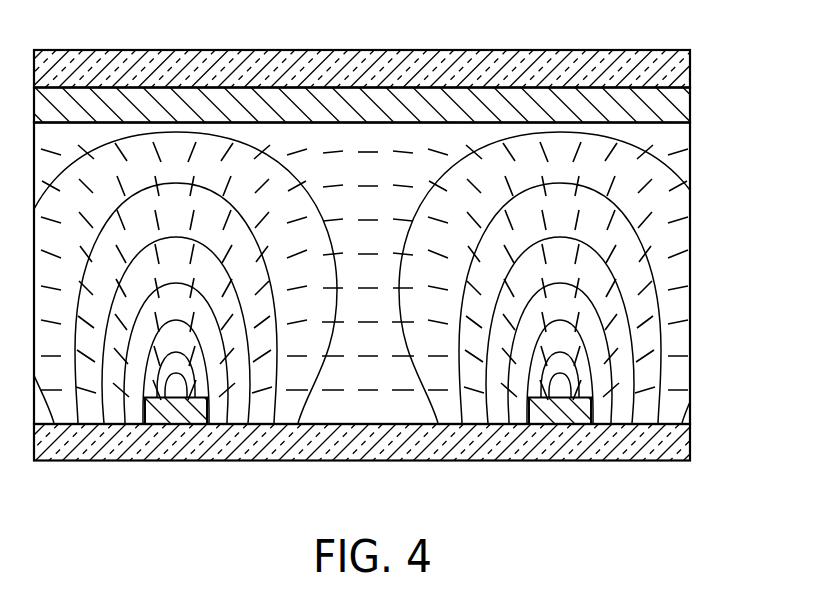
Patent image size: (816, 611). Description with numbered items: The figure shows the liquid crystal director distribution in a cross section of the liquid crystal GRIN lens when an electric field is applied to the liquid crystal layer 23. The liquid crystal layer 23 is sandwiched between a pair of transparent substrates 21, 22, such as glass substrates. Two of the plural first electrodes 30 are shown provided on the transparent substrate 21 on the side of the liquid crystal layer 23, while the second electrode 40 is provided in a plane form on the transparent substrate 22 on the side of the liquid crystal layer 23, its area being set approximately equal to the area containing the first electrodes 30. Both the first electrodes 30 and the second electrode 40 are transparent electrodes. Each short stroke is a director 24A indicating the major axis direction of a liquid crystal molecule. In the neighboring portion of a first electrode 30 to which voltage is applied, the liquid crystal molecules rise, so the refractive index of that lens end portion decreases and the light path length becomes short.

The transparent substrate 21 is at (686, 446).
The transparent substrate 22 is at (690, 63).
The liquid crystal layer 23 is at (715, 422).
The director 24A is at (369, 148).
The first electrode 30 is at (177, 411).
The second electrode 40 is at (688, 108).